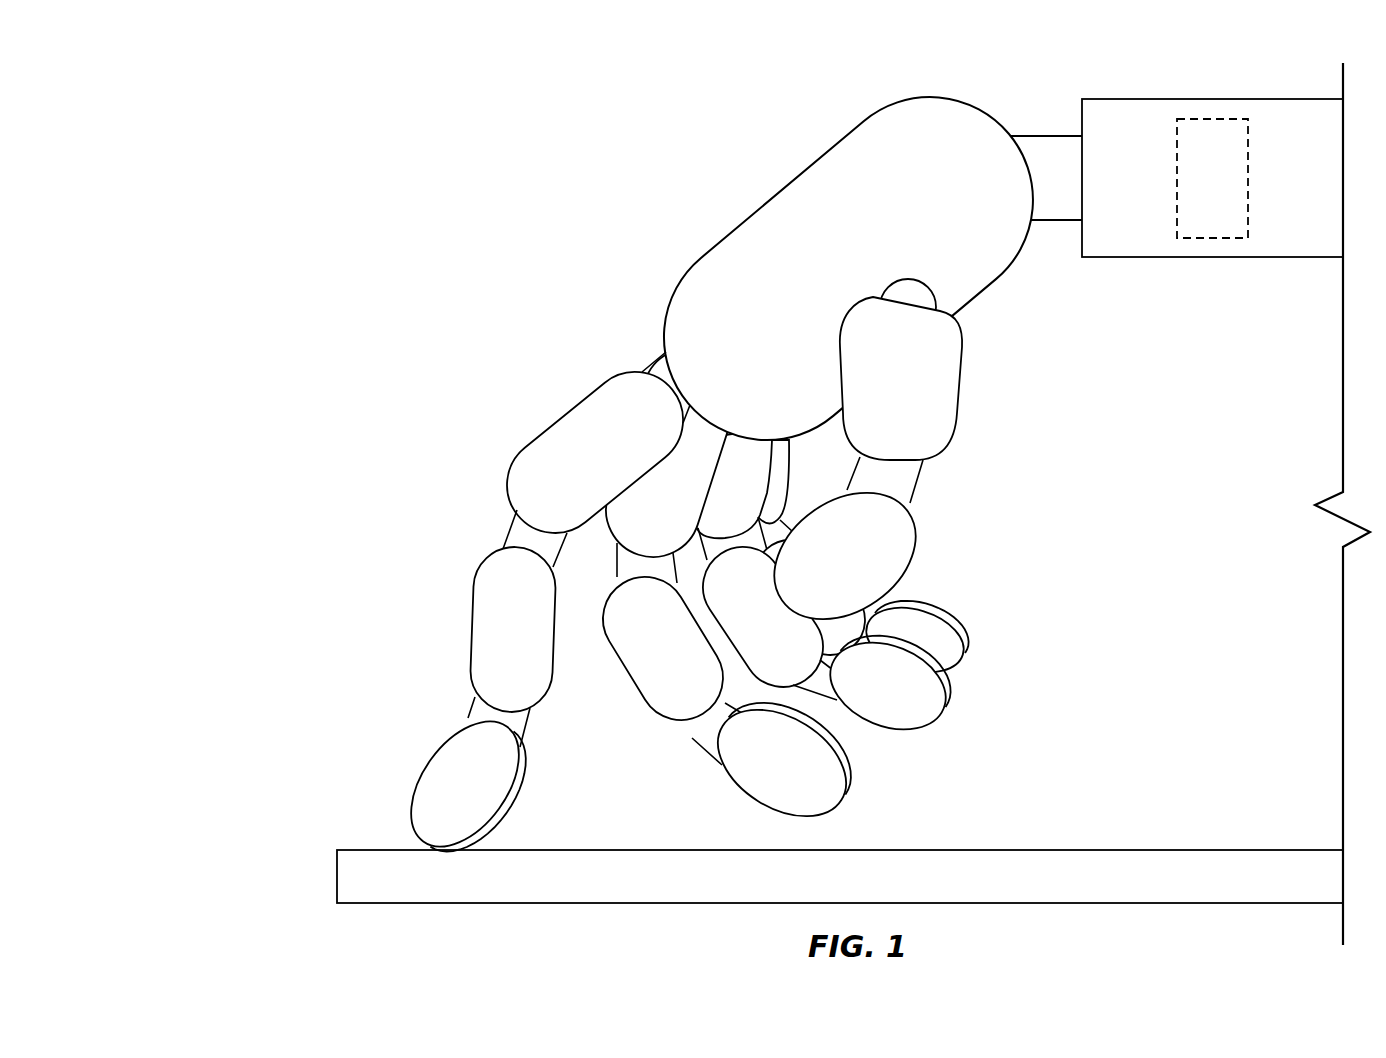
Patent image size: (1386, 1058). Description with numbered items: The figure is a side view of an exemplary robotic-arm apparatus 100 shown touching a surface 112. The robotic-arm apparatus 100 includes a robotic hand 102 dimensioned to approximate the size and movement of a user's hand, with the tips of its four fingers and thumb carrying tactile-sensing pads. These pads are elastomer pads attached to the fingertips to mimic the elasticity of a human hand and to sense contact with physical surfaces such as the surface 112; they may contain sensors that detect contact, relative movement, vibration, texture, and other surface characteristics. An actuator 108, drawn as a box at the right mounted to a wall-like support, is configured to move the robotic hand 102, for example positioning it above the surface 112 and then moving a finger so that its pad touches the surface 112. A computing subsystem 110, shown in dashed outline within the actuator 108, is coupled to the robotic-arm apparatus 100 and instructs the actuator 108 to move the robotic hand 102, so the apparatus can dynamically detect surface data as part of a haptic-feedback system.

The robotic-arm apparatus 100 is at (266, 145).
The robotic hand 102 is at (712, 252).
The actuator 108 is at (1150, 257).
The computing subsystem 110 is at (1218, 238).
The surface 112 is at (380, 850).